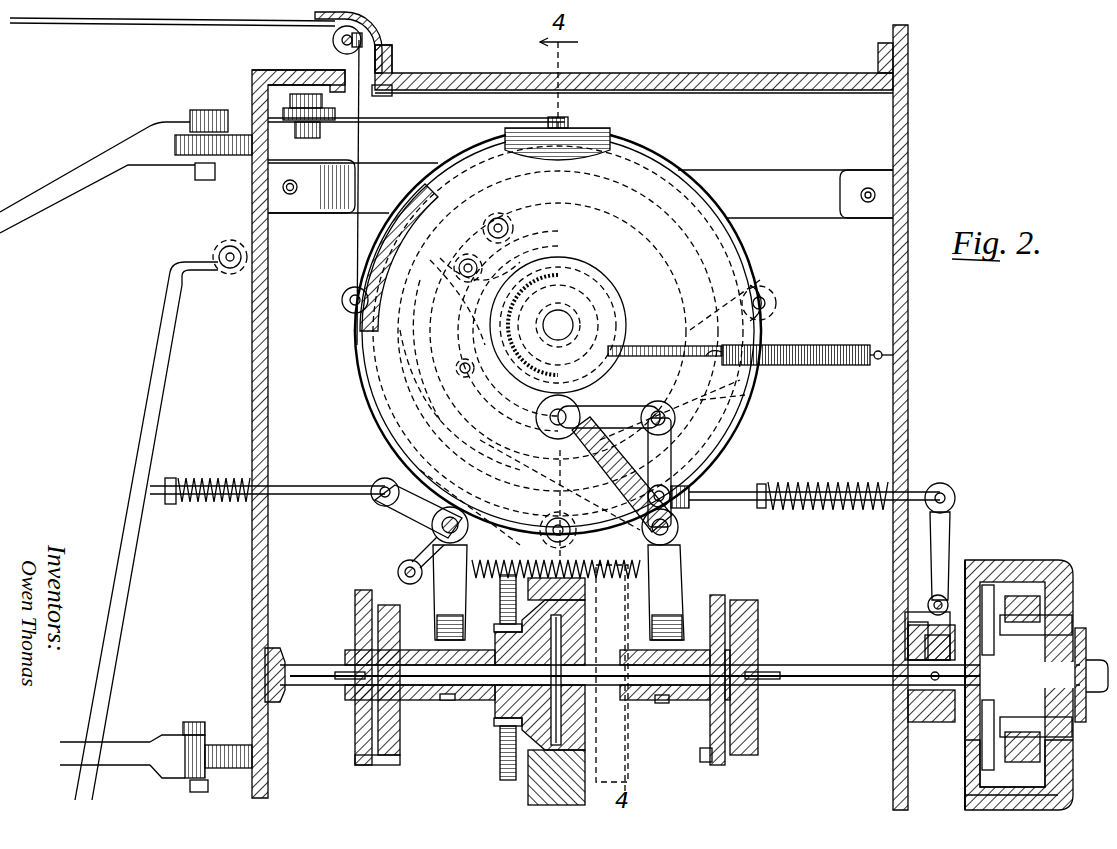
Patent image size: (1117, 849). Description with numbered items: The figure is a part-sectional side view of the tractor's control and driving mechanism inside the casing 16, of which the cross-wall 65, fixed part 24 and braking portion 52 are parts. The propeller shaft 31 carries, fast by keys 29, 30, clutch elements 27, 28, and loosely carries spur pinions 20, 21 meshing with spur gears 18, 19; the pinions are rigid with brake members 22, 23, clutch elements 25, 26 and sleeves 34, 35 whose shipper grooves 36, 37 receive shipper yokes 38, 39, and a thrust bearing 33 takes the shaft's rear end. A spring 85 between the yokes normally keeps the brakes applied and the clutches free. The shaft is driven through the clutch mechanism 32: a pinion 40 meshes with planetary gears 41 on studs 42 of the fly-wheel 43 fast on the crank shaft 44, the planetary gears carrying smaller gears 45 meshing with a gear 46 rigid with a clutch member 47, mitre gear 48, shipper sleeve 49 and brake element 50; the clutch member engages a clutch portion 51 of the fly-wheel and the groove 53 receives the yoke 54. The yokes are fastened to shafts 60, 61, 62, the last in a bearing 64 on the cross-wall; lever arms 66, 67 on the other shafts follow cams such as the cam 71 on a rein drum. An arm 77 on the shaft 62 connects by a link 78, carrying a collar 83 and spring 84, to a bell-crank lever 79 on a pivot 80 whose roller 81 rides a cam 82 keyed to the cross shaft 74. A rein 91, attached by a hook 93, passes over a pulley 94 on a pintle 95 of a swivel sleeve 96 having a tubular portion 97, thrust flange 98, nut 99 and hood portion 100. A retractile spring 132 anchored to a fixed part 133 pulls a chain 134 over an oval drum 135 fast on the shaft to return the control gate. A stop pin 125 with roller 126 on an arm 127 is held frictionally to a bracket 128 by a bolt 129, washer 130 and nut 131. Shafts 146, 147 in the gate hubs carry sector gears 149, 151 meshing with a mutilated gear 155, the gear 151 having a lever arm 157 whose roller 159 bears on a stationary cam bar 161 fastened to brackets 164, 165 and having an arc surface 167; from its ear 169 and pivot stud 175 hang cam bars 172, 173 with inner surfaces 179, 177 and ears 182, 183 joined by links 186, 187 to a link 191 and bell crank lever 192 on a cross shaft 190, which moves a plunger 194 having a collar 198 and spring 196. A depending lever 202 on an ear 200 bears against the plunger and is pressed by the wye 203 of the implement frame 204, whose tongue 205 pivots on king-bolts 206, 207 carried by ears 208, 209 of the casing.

The casing 16 is at (642, 74).
The cross-wall 65 is at (908, 432).
The hood portion 100 is at (372, 14).
The swivelled flanged idler pulley 94 is at (362, 40).
The pintle 95 is at (362, 46).
The swivel sleeve 96 is at (394, 56).
The thrust flange 98 is at (338, 44).
The nut 99 is at (402, 92).
The tubular portion 97 is at (390, 93).
The bolt 129 is at (290, 72).
The nut 131 is at (290, 99).
The fixed bracket 128 is at (338, 114).
The washer 130 is at (322, 130).
The arm 127 is at (484, 120).
The pin 125 is at (572, 122).
The roller 126 is at (596, 136).
The ear 169 is at (632, 143).
The bracket 165 is at (300, 176).
The cam bar 161 is at (772, 172).
The bracket 164 is at (854, 180).
The rein 91 is at (114, 25).
The king-bolt 207 is at (196, 112).
The ear 208 is at (240, 157).
The tongue 205 is at (65, 186).
The ear 200 is at (223, 247).
The depending lever 202 is at (147, 409).
The implement frame 204 is at (122, 742).
The king-bolt 206 is at (195, 722).
The ear 209 is at (238, 745).
The wye 203 is at (168, 774).
The collar 198 is at (172, 478).
The spring 196 is at (208, 478).
The plunger 194 is at (303, 486).
The link 187 is at (558, 334).
The hook 93 is at (400, 230).
The apertured ear 183 is at (345, 293).
The apertured ear 182 is at (770, 297).
The inner cam surface 179 is at (558, 331).
The pivot stud 175 is at (548, 168).
The arc-shaped cam surface 167 is at (558, 331).
The cam bar 172 is at (705, 287).
The cam bar 173 is at (485, 331).
The inner cam surface 177 is at (485, 331).
The sector gear 149 is at (434, 350).
The sector gear 151 is at (457, 302).
The shaft 147 is at (474, 259).
The shaft 146 is at (463, 400).
The lever arm 67 is at (575, 494).
The link 186 is at (710, 362).
The cam 82 is at (628, 318).
The elongated drum 135 is at (566, 285).
The cross shaft 74 is at (570, 318).
The cam 71 is at (510, 270).
The roller 159 is at (512, 222).
The lever arm 157 is at (465, 256).
The mutilated gear 155 is at (474, 367).
The chain 134 is at (672, 346).
The retractile spring 132 is at (805, 345).
The fixed part 133 is at (880, 345).
The roller 81 is at (582, 408).
The pivot 80 is at (676, 412).
The bell-crank lever 79 is at (655, 410).
The shaft 61 is at (680, 527).
The shipper yoke 39 is at (684, 581).
The lever arm 66 is at (444, 508).
The shaft 60 is at (432, 528).
The bell crank lever 192 is at (410, 556).
The cross shaft 190 is at (398, 572).
The shipper yoke 38 is at (450, 592).
The link 191 is at (548, 522).
The spring 85 is at (580, 560).
The link 78 is at (725, 492).
The collar 83 is at (768, 486).
The spring 84 is at (834, 484).
The arm 77 is at (950, 540).
The shaft 62 is at (928, 594).
The bearing 64 is at (912, 601).
The fixed braking portion 52 is at (906, 626).
The shipper yoke 54 is at (925, 645).
The thrust bearing 33 is at (278, 648).
The clutch element 27 is at (355, 748).
The clutch element 25 is at (398, 752).
The sleeve 34 is at (468, 702).
The shipper groove 36 is at (446, 702).
The spur pinion 20 is at (522, 735).
The spur gear 18 is at (500, 772).
The brake member 22 is at (510, 750).
The fixed part 24 is at (585, 592).
The spur pinion 21 is at (590, 735).
The brake member 23 is at (588, 748).
The spur gear 19 is at (630, 776).
The sleeve 35 is at (638, 701).
The shipper groove 37 is at (665, 702).
The clutch element 28 is at (758, 749).
The clutch element 26 is at (710, 745).
The propeller shaft 31 is at (299, 665).
The key 29 is at (332, 680).
The key 30 is at (770, 668).
The brake element 50 is at (893, 714).
The shipper groove 53 is at (925, 706).
The planetary gears 41 is at (1064, 561).
The fly-wheel 43 is at (1066, 782).
The clutch mechanism 32 is at (1032, 570).
The gears 45 is at (1014, 592).
The clutch portion 51 is at (984, 582).
The studs 42 is at (1070, 625).
The crank shaft 44 is at (1084, 660).
The pinion 40 is at (1086, 695).
The mitre gear 48 is at (972, 742).
The gear 46 is at (1000, 752).
The shipper sleeve 49 is at (960, 722).
The clutch member 47 is at (975, 790).